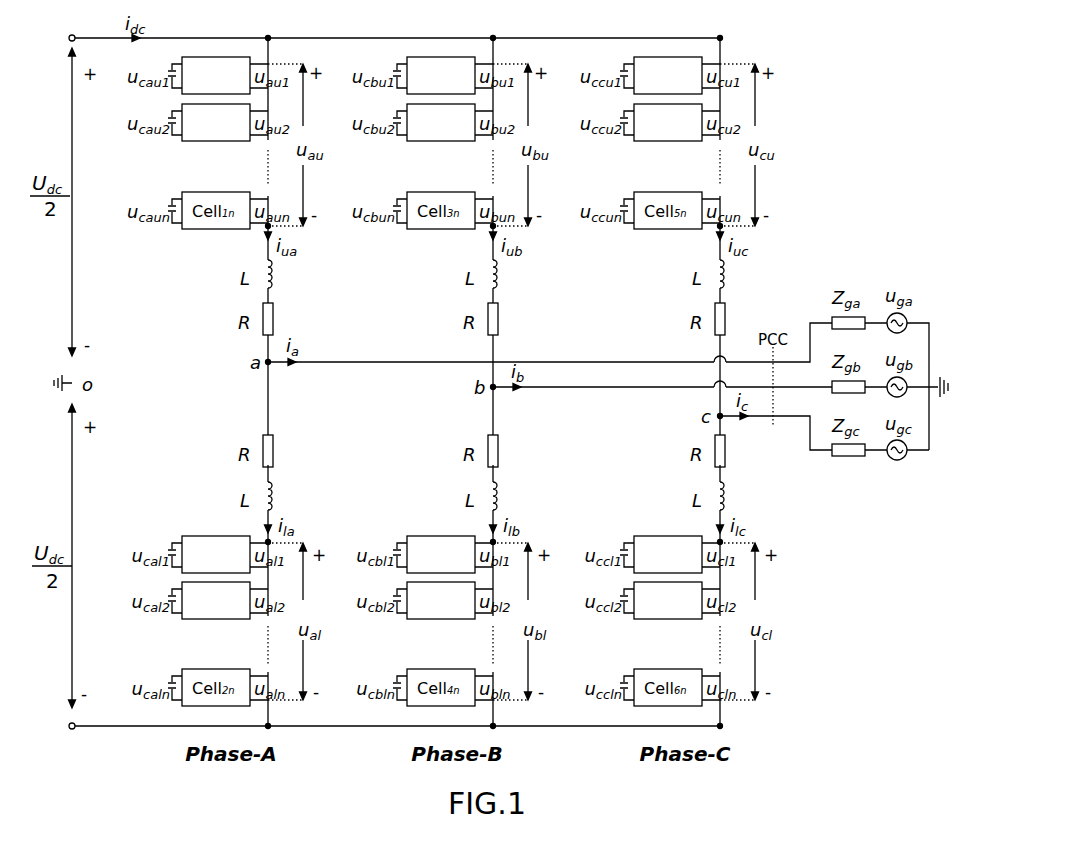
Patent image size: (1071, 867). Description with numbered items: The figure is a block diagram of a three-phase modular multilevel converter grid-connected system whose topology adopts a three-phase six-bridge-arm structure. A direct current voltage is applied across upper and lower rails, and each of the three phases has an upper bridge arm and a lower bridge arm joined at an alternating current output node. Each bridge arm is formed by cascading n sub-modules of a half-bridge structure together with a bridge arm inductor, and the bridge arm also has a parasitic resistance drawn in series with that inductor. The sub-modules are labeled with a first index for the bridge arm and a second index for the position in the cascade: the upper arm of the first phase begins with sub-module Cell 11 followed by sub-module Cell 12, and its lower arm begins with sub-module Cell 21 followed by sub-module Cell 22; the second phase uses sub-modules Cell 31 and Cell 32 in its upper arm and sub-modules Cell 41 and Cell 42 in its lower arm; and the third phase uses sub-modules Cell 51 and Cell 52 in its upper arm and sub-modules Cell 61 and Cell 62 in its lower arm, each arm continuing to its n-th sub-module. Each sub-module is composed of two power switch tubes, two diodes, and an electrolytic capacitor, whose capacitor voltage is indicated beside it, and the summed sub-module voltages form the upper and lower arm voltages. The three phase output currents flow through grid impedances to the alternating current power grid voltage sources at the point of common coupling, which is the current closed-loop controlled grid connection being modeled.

The Cell 11 (phase A upper arm sub-module 1) 11 is at (218, 75).
The Cell 12 (phase A upper arm sub-module 2) 12 is at (218, 122).
The Cell 21 (phase A lower arm sub-module 1) 21 is at (218, 554).
The Cell 22 (phase A lower arm sub-module 2) 22 is at (218, 600).
The Cell 31 (phase B upper arm sub-module 1) 31 is at (443, 75).
The Cell 32 (phase B upper arm sub-module 2) 32 is at (443, 122).
The Cell 41 (phase B lower arm sub-module 1) 41 is at (443, 554).
The Cell 42 (phase B lower arm sub-module 2) 42 is at (443, 600).
The Cell 51 (phase C upper arm sub-module 1) 51 is at (670, 75).
The Cell 52 (phase C upper arm sub-module 2) 52 is at (670, 122).
The Cell 61 (phase C lower arm sub-module 1) 61 is at (670, 554).
The Cell 62 (phase C lower arm sub-module 2) 62 is at (670, 600).